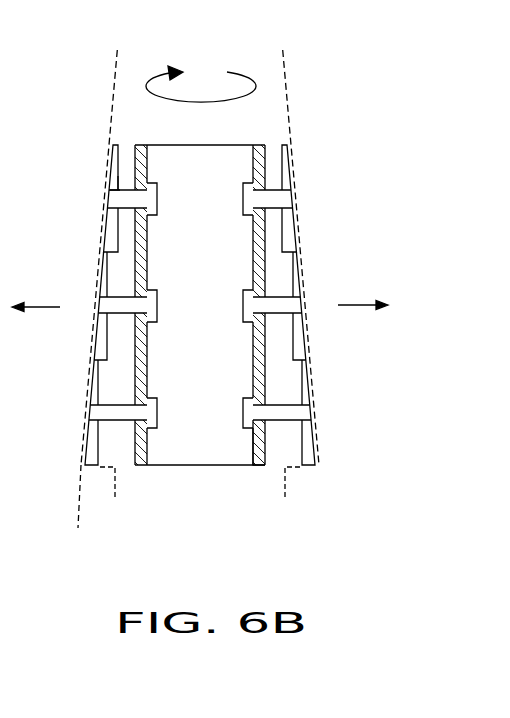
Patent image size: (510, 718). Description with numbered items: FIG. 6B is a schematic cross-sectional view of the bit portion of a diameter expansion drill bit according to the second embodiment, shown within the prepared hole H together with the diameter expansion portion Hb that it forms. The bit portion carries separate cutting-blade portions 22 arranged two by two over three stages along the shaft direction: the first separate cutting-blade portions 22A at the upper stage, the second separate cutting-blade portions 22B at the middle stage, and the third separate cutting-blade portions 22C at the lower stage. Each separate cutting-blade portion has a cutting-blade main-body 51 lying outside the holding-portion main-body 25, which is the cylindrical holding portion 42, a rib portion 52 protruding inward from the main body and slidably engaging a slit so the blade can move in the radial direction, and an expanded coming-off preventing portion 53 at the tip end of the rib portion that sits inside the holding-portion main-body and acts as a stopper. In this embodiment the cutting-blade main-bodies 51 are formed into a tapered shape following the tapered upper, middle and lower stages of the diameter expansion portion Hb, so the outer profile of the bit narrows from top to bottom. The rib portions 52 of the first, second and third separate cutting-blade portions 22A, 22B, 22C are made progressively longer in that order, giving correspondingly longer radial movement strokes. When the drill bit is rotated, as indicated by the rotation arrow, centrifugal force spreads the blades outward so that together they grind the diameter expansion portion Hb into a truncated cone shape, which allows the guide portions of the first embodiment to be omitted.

The separate cutting-blade portion 22 is at (270, 295).
The first separate cutting-blade portion 22A is at (336, 148).
The second separate cutting-blade portion 22B is at (336, 258).
The third separate cutting-blade portion 22C is at (336, 370).
The holding-portion main-body 25 is at (258, 466).
The cylindrical holding portion 42 is at (265, 489).
The cutting-blade main-body 51 is at (115, 192).
The rib portion 52 is at (132, 200).
The coming-off preventing portion 53 is at (155, 202).
The prepared hole H is at (114, 93).
The diameter expansion portion Hb is at (185, 509).